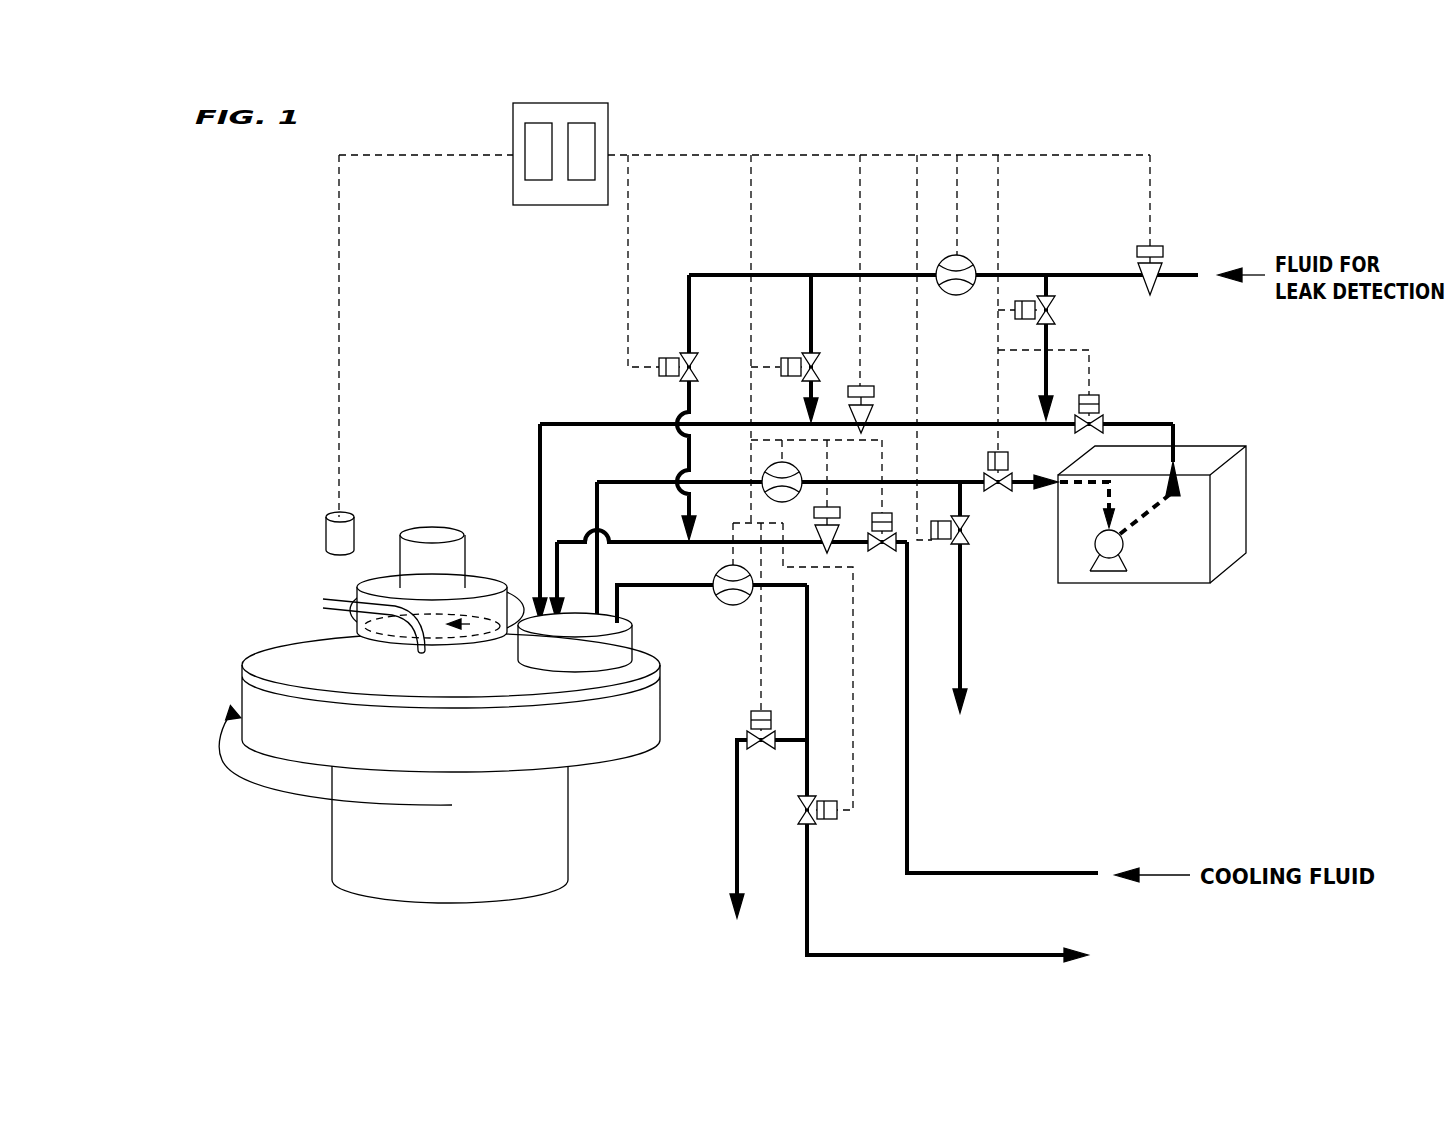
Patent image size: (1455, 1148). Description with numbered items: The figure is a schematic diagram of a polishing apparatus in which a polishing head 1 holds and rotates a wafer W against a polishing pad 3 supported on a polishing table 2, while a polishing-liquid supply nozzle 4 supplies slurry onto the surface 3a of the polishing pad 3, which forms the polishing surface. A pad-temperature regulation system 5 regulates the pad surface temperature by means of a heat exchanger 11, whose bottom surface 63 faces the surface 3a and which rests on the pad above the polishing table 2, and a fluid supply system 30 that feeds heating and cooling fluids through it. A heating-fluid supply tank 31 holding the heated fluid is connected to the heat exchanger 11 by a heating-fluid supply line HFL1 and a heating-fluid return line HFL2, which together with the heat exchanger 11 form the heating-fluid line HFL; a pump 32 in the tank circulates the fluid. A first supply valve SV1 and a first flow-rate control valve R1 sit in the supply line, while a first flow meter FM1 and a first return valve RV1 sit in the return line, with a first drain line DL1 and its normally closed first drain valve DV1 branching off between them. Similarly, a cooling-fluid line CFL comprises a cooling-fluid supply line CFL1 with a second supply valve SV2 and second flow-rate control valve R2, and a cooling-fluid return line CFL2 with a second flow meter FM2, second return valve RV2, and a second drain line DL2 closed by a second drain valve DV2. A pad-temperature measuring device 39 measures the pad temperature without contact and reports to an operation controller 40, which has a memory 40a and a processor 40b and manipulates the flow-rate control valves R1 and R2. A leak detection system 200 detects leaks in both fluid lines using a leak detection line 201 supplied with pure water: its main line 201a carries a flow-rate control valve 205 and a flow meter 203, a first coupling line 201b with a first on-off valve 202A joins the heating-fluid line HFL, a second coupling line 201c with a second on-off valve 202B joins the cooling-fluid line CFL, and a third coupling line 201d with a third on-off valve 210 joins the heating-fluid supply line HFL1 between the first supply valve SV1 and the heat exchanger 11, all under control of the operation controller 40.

The leak detection system 200 is at (1034, 148).
The operation controller 40 is at (513, 125).
The memory 40a is at (538, 180).
The processor 40b is at (581, 180).
The leak detection line 201 is at (1068, 268).
The main line 201a is at (1180, 278).
The first coupling line 201b is at (811, 292).
The second coupling line 201c is at (689, 292).
The third coupling line 201d is at (1050, 336).
The flow meter 203 is at (955, 296).
The flow-rate control valve 205 is at (1160, 248).
The third on-off valve 210 is at (1052, 305).
The first on-off valve 202A is at (795, 378).
The second on-off valve 202B is at (678, 375).
The first flow-rate control valve R1 is at (868, 386).
The second flow-rate control valve R2 is at (828, 556).
The first supply valve SV1 is at (1098, 396).
The second supply valve SV2 is at (882, 550).
The first return valve RV1 is at (1006, 460).
The second return valve RV2 is at (835, 824).
The first drain valve DV1 is at (938, 542).
The second drain valve DV2 is at (750, 714).
The first flow meter FM1 is at (770, 465).
The second flow meter FM2 is at (715, 578).
The heating-fluid line HFL is at (1140, 396).
The heating-fluid supply line HFL1 is at (1178, 432).
The heating-fluid return line HFL2 is at (1022, 488).
The cooling-fluid line CFL is at (1096, 816).
The cooling-fluid supply line CFL1 is at (909, 795).
The cooling-fluid return line CFL2 is at (965, 952).
The first drain line DL1 is at (962, 632).
The second drain line DL2 is at (735, 878).
The fluid supply system 30 is at (1090, 670).
The heating-fluid supply tank 31 is at (1248, 493).
The pump 32 is at (1107, 575).
The pad-temperature regulation system 5 is at (539, 396).
The heat exchanger 11 is at (630, 618).
The polishing head 1 is at (392, 578).
The wafer W is at (475, 617).
The polishing table 2 is at (605, 738).
The polishing pad 3 is at (262, 652).
The surface of the polishing pad 3a is at (318, 650).
The polishing-liquid supply nozzle 4 is at (421, 650).
The bottom surface 63 is at (552, 670).
The pad-temperature measuring device 39 is at (322, 532).